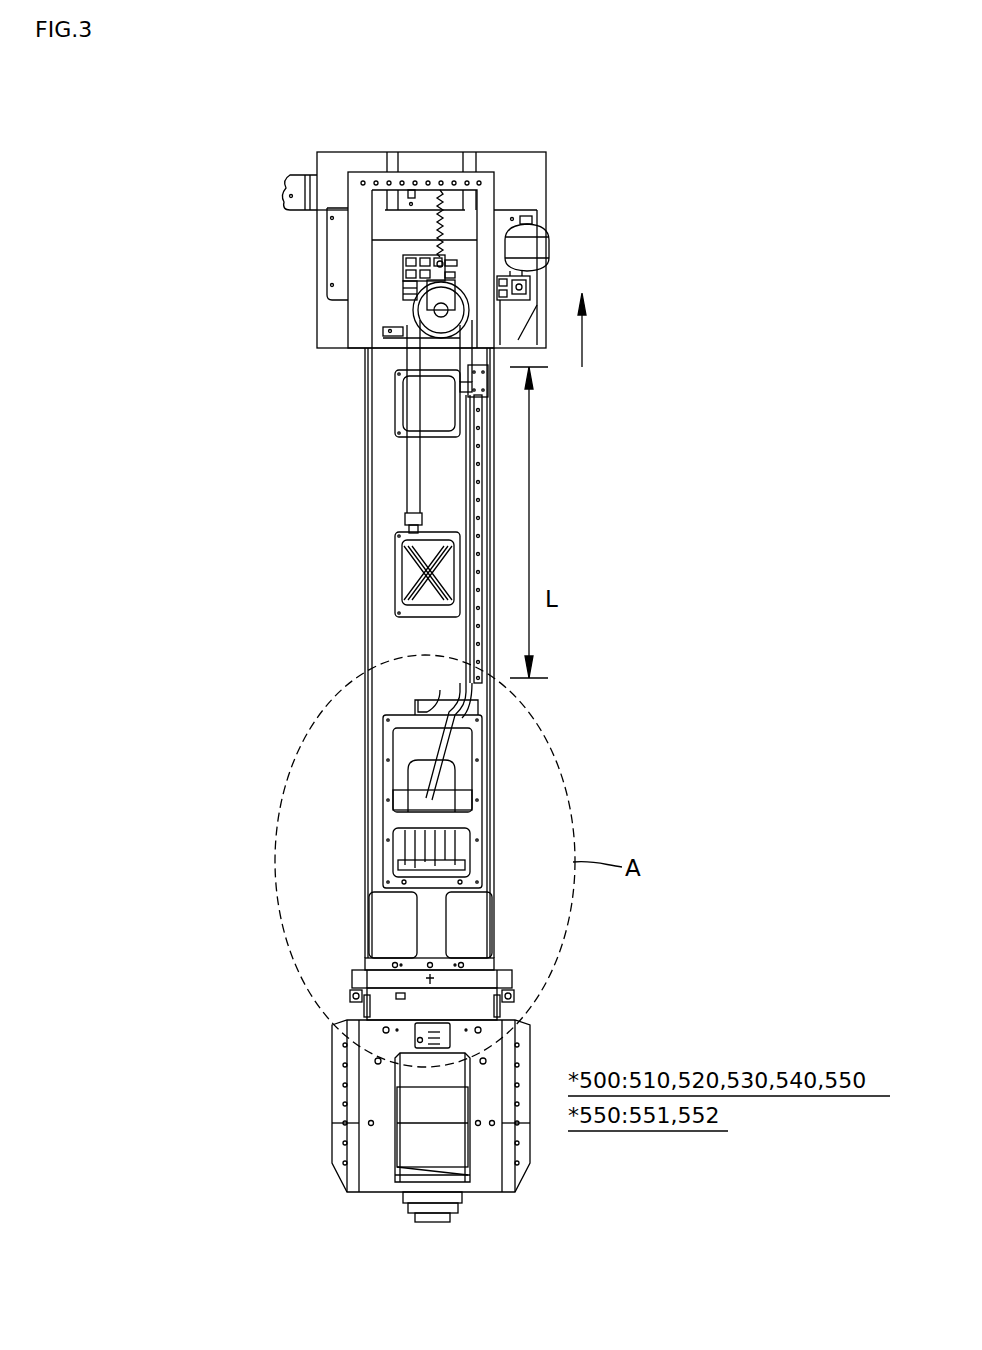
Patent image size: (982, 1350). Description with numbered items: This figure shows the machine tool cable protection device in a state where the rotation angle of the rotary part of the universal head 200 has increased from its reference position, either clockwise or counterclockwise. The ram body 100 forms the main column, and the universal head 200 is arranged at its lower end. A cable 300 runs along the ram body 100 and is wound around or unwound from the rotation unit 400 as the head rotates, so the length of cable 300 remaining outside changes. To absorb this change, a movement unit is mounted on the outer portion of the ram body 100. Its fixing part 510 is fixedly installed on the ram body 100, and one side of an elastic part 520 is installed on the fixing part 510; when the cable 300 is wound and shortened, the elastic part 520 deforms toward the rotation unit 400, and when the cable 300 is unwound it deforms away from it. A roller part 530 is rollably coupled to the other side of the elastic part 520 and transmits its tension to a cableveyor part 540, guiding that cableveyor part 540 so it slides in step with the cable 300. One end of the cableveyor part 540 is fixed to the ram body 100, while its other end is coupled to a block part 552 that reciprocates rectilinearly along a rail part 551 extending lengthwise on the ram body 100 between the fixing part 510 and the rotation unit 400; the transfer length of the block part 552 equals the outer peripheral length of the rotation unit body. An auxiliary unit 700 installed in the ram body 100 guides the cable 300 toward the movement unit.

The ram body 100 is at (382, 641).
The universal head 200 is at (315, 1077).
The cable 300 is at (403, 547).
The rotation unit 400 is at (392, 795).
The fixing part 510 is at (371, 180).
The elastic part 520 is at (438, 227).
The roller part 530 is at (428, 311).
The cableveyor part 540 is at (400, 423).
The rail part 551 is at (480, 473).
The block part 552 is at (484, 386).
The auxiliary unit 700 is at (482, 700).